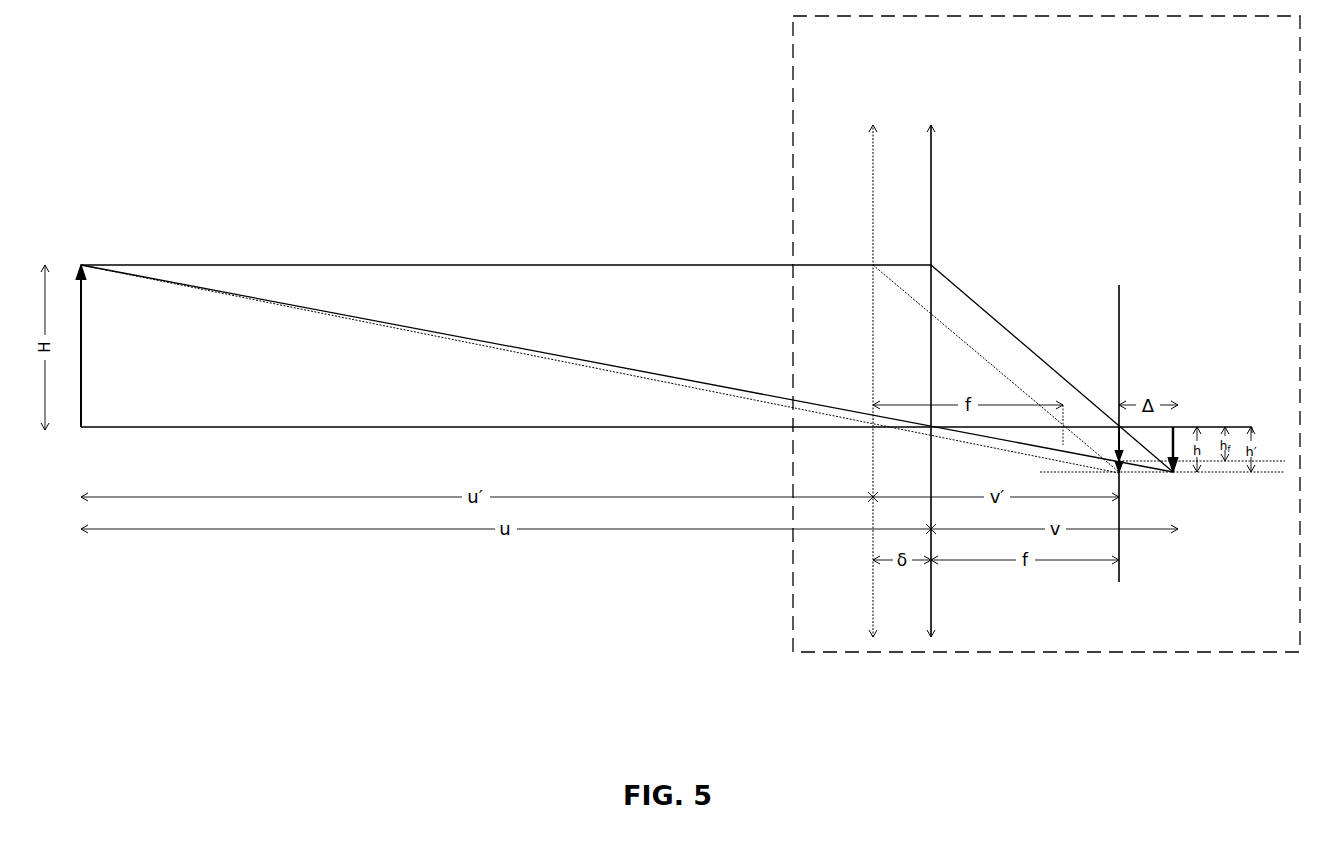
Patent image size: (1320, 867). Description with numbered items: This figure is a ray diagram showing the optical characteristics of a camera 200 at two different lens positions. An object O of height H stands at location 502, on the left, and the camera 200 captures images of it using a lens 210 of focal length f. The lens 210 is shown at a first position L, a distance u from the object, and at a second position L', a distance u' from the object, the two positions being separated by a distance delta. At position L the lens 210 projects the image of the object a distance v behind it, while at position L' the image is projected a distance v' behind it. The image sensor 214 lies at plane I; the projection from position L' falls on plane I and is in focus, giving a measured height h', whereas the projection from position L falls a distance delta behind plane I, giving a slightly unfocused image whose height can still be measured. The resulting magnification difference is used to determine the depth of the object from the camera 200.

The location 502 is at (86, 220).
The lens 210 is at (865, 80).
The image sensor 214 is at (1123, 250).
The camera 200 is at (1107, 656).